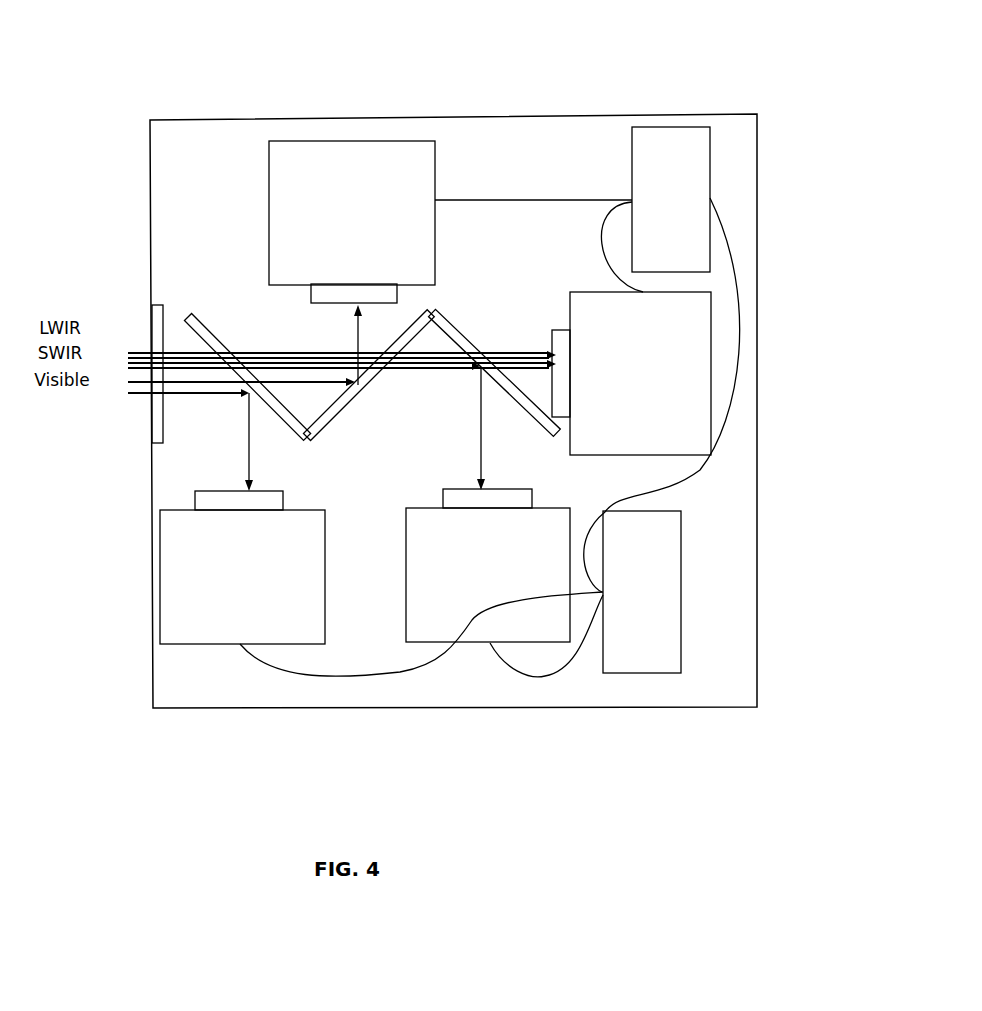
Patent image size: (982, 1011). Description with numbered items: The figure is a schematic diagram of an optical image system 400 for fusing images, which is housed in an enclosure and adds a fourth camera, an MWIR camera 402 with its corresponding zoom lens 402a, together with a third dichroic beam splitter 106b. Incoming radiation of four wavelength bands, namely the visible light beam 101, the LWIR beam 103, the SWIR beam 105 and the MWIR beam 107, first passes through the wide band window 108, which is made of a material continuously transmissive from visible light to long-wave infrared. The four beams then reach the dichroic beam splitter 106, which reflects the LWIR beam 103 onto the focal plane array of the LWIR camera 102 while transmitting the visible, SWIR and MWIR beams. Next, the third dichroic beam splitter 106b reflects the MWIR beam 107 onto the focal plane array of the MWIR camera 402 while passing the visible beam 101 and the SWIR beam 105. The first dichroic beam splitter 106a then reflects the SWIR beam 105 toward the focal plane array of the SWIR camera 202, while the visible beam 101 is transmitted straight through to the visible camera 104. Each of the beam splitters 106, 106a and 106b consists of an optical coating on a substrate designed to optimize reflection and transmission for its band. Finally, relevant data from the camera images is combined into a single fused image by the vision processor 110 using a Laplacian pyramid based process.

The visible light beam 101 is at (527, 352).
The LWIR camera 102 is at (195, 642).
The LWIR beam 103 is at (248, 448).
The visible camera 104 is at (703, 402).
The SWIR beam 105 is at (485, 470).
The dichroic beam splitter 106 is at (190, 317).
The first dichroic beam splitter 106a is at (478, 360).
The third dichroic beam splitter 106b is at (412, 337).
The MWIR beam 107 is at (352, 355).
The wide band window 108 is at (155, 307).
The vision processor 110 is at (703, 148).
The SWIR camera 202 is at (478, 633).
The optical image system 400 is at (614, 755).
The MWIR camera 402 is at (350, 165).
The zoom lens 402a is at (310, 290).